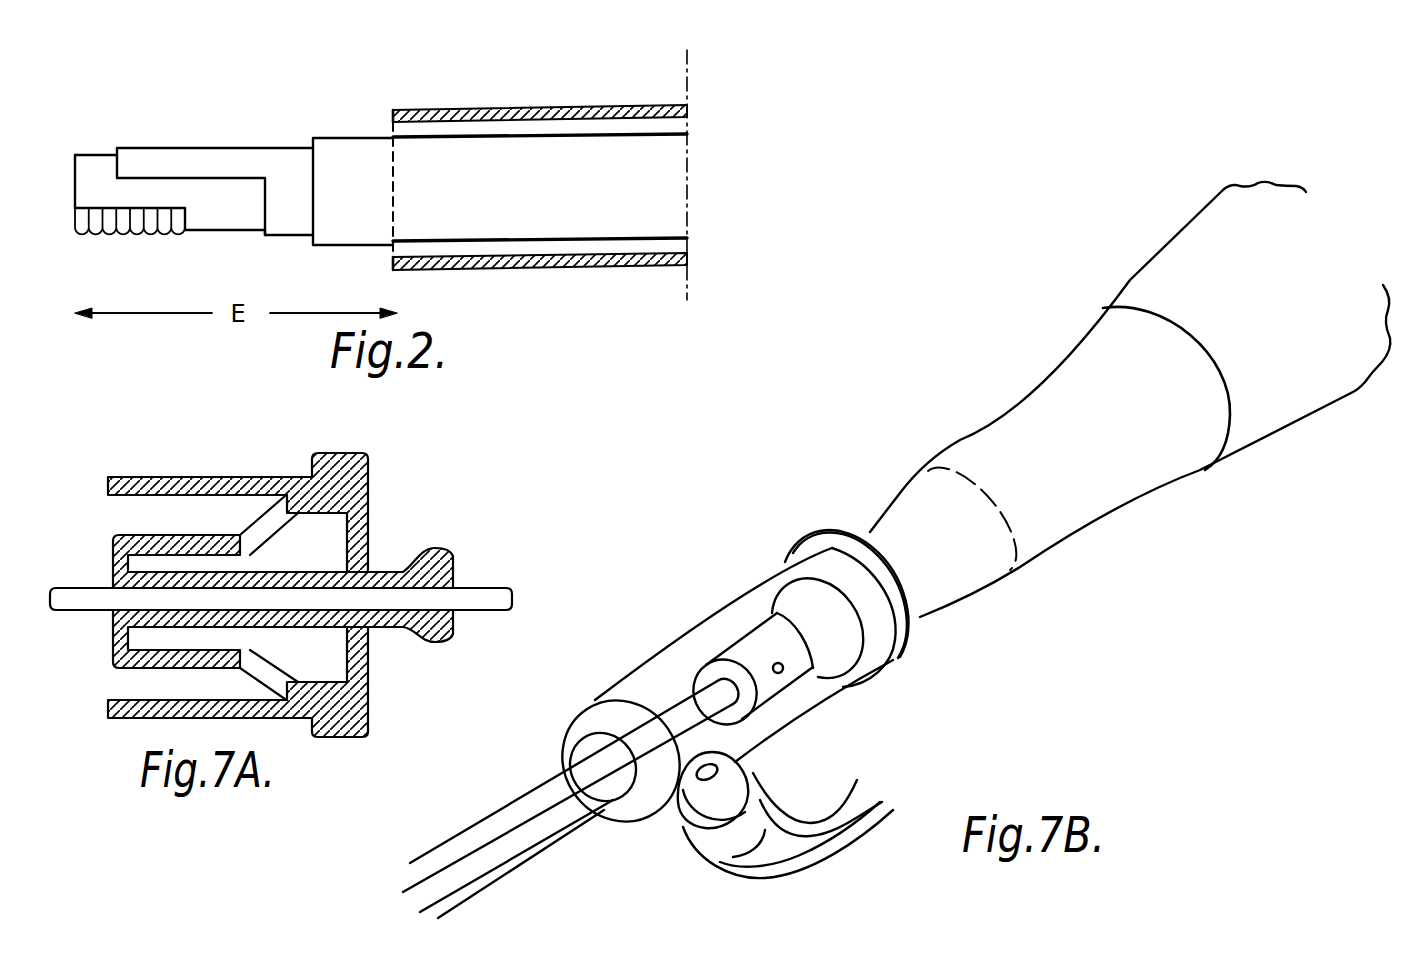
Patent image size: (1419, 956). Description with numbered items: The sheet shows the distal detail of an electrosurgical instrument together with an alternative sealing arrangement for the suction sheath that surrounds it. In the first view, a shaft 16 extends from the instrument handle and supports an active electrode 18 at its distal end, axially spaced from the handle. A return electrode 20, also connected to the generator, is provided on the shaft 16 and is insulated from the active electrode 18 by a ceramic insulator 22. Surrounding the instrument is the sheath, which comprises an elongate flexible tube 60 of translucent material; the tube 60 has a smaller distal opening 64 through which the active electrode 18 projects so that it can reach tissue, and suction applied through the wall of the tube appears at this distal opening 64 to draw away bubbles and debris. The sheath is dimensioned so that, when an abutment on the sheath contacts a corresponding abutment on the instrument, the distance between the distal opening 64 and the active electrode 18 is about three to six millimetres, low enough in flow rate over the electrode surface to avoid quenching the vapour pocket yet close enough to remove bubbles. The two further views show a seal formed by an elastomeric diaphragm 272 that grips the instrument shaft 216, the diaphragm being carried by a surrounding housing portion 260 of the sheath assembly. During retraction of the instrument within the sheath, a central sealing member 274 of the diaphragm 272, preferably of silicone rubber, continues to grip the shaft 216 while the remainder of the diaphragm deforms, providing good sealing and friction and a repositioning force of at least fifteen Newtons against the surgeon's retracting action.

In FIG. 2, the shaft 16 is at (566, 199).
In FIG. 2, the active electrode 18 is at (110, 222).
In FIG. 2, the return electrode 20 is at (331, 150).
In FIG. 2, the ceramic insulator 22 is at (175, 160).
In FIG. 2, the elongate flexible tube 60 is at (597, 108).
In FIG. 2, the distal opening 64 is at (384, 126).
In FIG. 7A, the shaft 216 is at (72, 598).
In FIG. 7B, the shaft 216 is at (549, 818).
In FIG. 7A, the housing 260 is at (178, 485).
In FIG. 7B, the elastomeric diaphragm 272 is at (786, 671).
In FIG. 7A, the central sealing member 274 is at (340, 568).